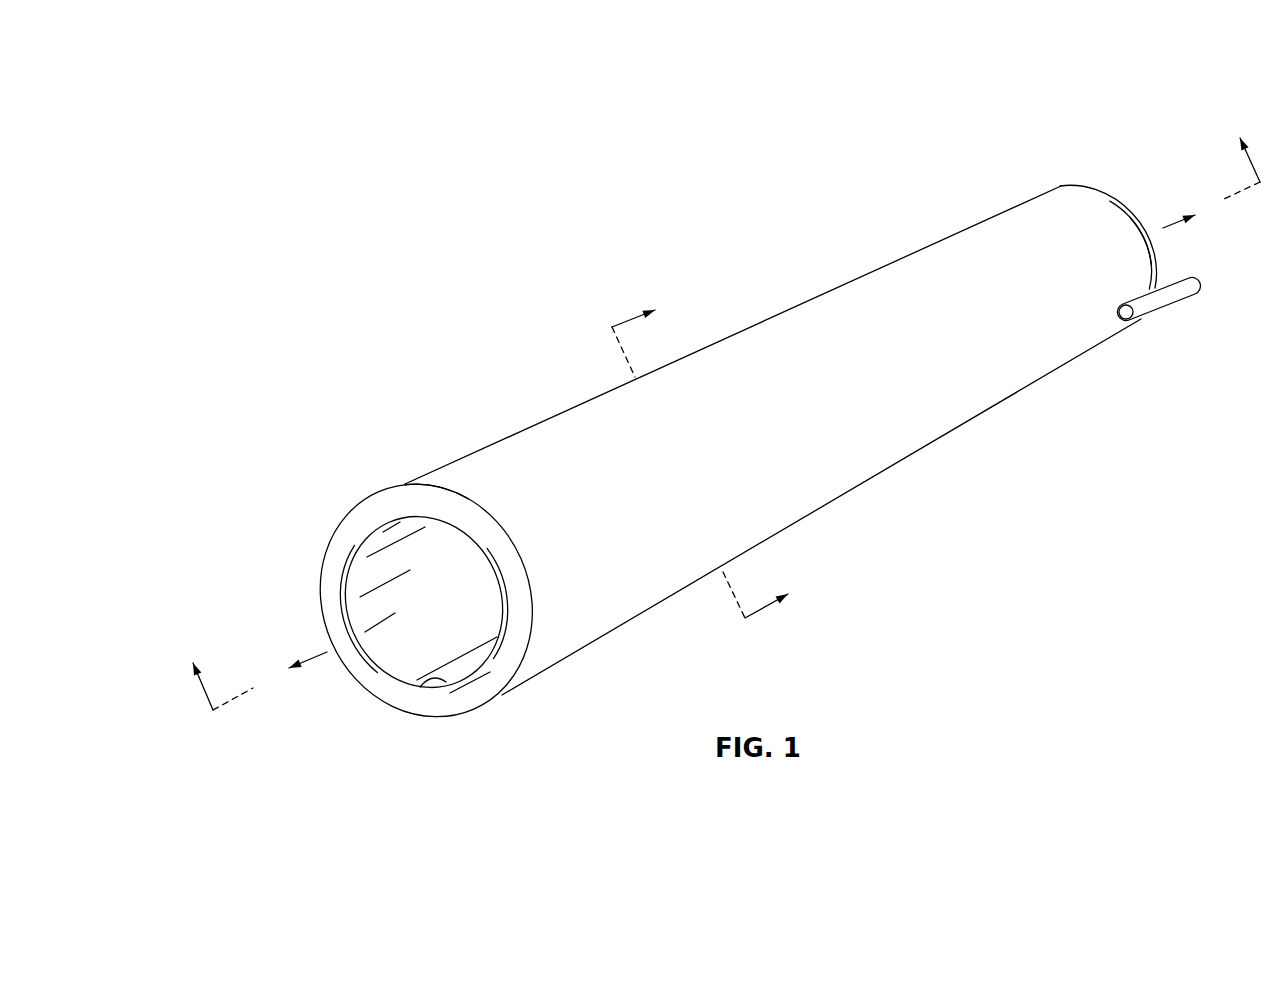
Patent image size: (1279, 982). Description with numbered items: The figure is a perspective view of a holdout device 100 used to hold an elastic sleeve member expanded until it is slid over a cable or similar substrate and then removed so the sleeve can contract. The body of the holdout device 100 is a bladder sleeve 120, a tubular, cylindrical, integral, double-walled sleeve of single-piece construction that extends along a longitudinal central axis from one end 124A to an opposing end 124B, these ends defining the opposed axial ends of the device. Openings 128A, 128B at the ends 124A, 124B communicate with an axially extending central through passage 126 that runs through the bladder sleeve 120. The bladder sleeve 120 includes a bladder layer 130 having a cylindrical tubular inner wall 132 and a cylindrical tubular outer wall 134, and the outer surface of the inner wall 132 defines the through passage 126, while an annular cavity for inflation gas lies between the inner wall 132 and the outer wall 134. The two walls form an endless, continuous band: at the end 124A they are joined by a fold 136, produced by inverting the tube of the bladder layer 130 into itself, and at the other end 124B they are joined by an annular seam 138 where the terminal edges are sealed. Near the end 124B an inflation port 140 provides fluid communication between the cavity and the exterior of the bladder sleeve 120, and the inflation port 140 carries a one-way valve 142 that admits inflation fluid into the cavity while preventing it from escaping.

The holdout device 100 is at (300, 337).
The bladder sleeve 120 is at (773, 440).
The end 124A is at (360, 522).
The end 124B is at (1085, 185).
The through passage 126 is at (431, 600).
The opening 128A is at (343, 573).
The opening 128B is at (1148, 218).
The bladder layer 130 is at (963, 432).
The inner wall 132 is at (420, 687).
The outer wall 134 is at (773, 343).
The fold 136 is at (413, 500).
The annular seam 138 is at (1123, 217).
The inflation port 140 is at (1121, 313).
The one-way valve 142 is at (1173, 290).